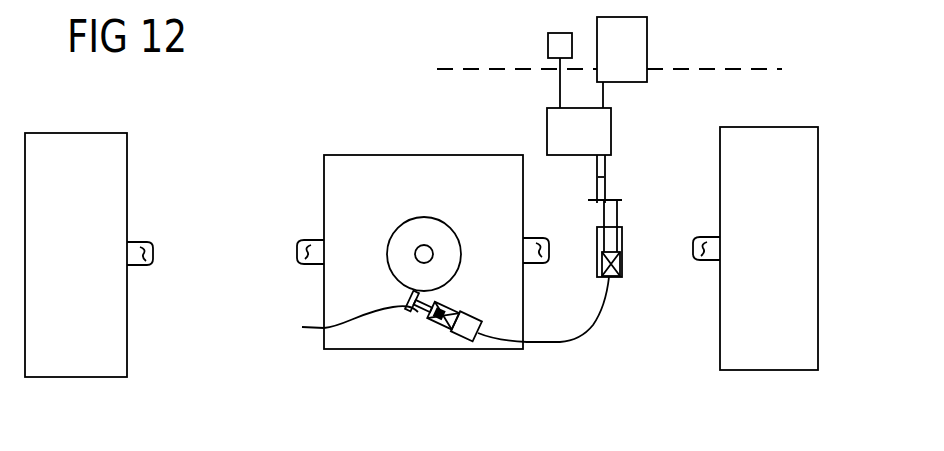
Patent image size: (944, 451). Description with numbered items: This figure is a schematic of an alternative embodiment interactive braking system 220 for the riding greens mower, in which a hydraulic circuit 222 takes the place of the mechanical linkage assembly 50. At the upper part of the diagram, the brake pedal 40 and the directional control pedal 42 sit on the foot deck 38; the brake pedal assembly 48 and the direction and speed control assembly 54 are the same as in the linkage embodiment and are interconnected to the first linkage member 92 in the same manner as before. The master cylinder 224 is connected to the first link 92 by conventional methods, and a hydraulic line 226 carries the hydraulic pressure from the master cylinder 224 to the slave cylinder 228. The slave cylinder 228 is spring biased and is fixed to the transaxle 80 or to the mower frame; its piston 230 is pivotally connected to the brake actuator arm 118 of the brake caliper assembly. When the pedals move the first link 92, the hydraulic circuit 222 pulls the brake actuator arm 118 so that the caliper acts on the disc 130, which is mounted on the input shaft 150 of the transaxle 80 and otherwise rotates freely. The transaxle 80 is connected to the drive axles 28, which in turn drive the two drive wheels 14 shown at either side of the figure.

The drive wheel 14 is at (125, 162).
The drive axle 28 is at (141, 243).
The foot deck 38 is at (453, 70).
The brake pedal 40 is at (548, 47).
The directional control pedal 42 is at (640, 67).
The brake pedal assembly 48 is at (533, 113).
The linkage assembly 50 is at (622, 182).
The direction and speed control assembly 54 is at (623, 123).
The transaxle 80 is at (372, 192).
The first linkage member 92 is at (598, 177).
The brake actuator arm 118 is at (412, 325).
The disc 130 is at (417, 230).
The input shaft 150 is at (429, 248).
The alternative embodiment interactive braking system 220 is at (308, 148).
The hydraulic circuit 222 is at (618, 312).
The master cylinder 224 is at (623, 263).
The hydraulic line 226 is at (570, 342).
The slave cylinder 228 is at (467, 337).
The piston 230 is at (419, 315).